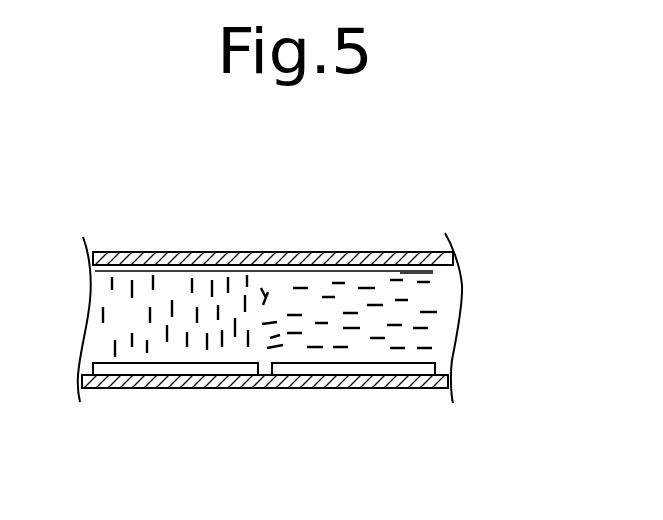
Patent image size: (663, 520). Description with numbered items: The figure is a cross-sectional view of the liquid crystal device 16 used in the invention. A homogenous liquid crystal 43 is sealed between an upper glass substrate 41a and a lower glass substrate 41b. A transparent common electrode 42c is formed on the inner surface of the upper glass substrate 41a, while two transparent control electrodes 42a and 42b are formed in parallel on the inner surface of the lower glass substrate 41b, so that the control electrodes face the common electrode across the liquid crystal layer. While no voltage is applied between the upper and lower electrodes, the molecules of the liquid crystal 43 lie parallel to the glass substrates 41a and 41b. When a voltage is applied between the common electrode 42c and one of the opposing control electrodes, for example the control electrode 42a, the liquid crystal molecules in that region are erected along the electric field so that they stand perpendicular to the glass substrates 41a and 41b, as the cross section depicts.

The liquid crystal device 16 is at (351, 220).
The glass substrate 41a is at (233, 256).
The glass substrate 41b is at (257, 368).
The control electrode 42a is at (165, 369).
The control electrode 42b is at (365, 368).
The common electrode 42c is at (433, 272).
The homogenous liquid crystal 43 is at (452, 309).